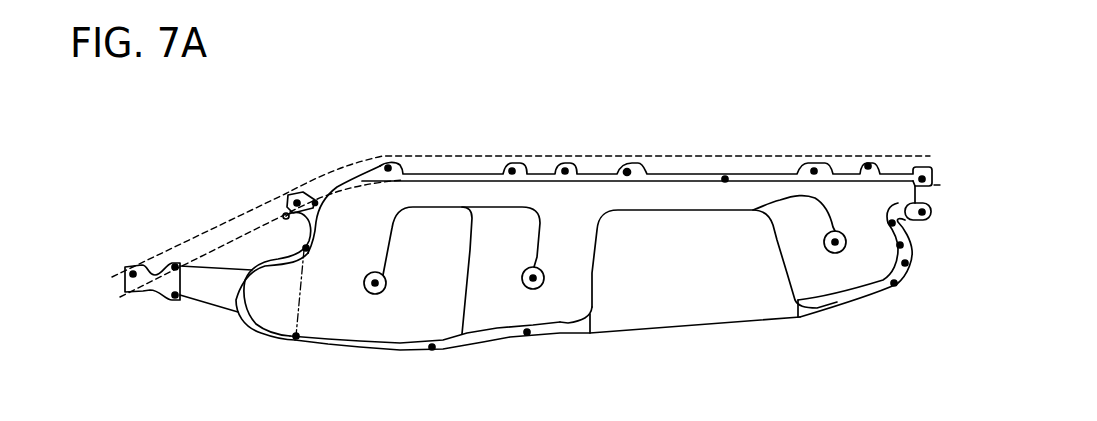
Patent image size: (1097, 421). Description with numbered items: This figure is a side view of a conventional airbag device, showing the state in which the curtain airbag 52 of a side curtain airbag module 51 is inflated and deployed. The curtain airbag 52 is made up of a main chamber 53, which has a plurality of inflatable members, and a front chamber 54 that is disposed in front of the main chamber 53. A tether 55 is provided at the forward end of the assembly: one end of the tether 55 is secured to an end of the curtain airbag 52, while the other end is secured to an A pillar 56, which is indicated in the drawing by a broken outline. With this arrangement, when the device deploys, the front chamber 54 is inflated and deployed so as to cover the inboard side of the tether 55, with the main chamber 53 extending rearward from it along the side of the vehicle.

The side curtain airbag module 51 is at (638, 108).
The curtain airbag 52 is at (474, 174).
The main chamber 53 is at (555, 313).
The front chamber 54 is at (275, 320).
The tether 55 is at (204, 293).
The A pillar 56 is at (249, 211).